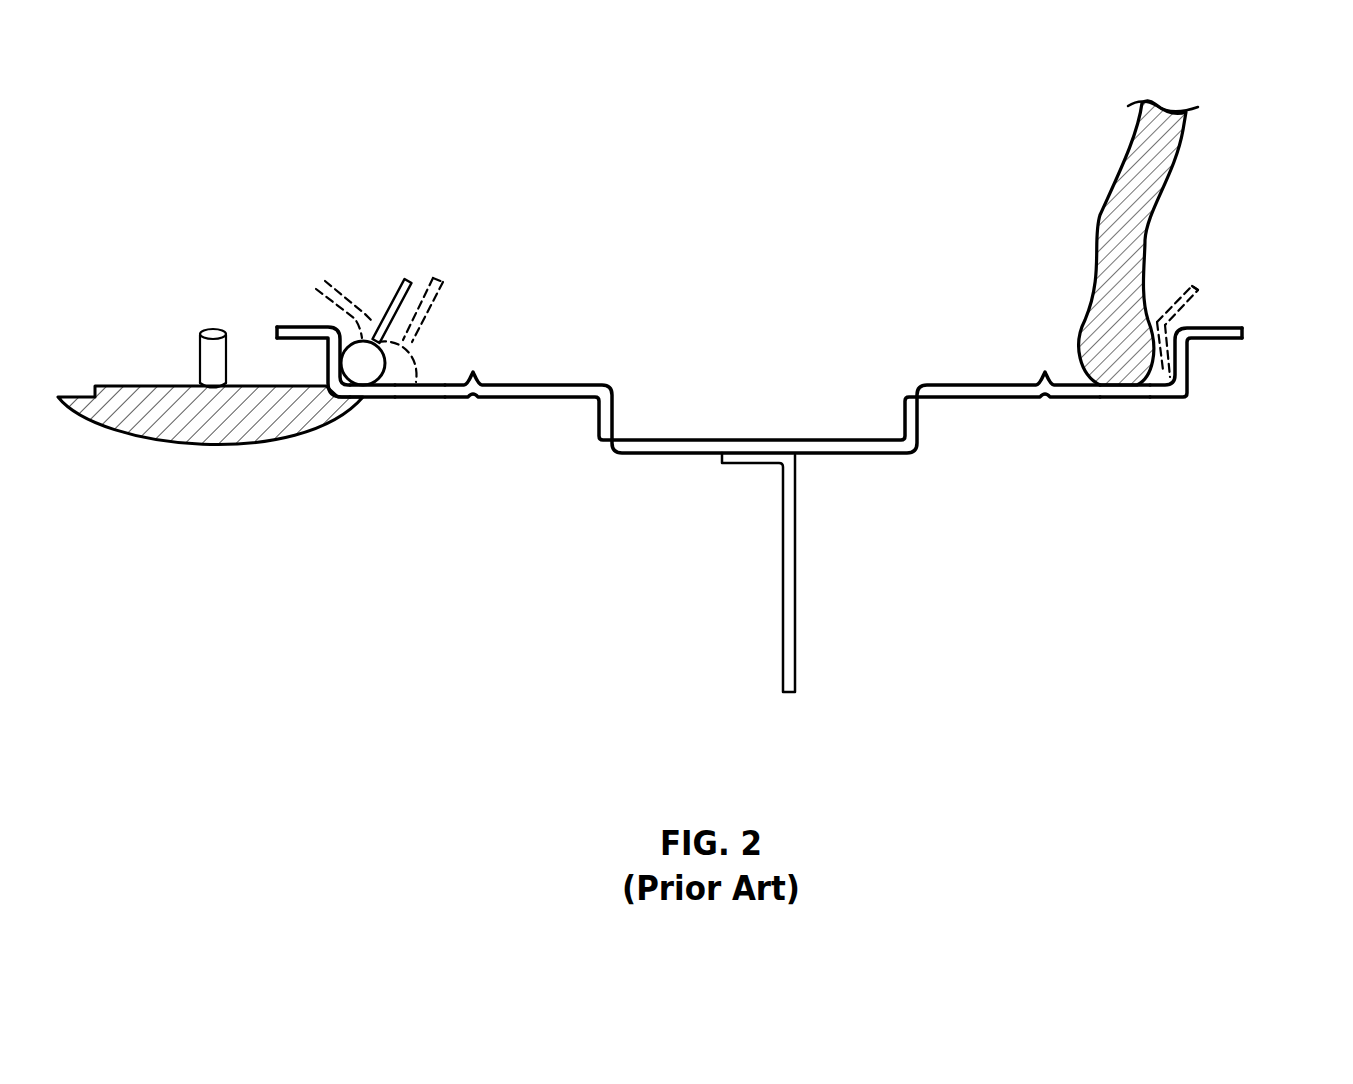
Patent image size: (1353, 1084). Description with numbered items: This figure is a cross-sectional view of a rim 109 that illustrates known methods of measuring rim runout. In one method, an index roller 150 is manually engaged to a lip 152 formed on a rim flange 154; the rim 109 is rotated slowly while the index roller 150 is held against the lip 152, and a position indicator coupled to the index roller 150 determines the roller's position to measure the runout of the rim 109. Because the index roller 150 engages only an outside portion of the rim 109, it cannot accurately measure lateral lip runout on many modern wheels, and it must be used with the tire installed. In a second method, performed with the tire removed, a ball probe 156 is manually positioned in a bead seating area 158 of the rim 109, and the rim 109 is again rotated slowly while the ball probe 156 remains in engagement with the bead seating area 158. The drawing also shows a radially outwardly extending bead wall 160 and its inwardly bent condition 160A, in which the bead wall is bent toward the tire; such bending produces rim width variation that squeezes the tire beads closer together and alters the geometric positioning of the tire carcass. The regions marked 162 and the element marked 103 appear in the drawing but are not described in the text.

The vehicle body panel 103 is at (1195, 141).
The rim 109 is at (868, 453).
The index roller 150 is at (300, 438).
The lip 152 is at (370, 400).
The rim flange 154 is at (513, 398).
The ball probe 156 is at (362, 362).
The bead seating area 158 is at (378, 383).
The bead wall 160 is at (328, 361).
The bead wall bent inwardly 160A is at (1196, 262).
The flat region of panel 162 is at (397, 398).